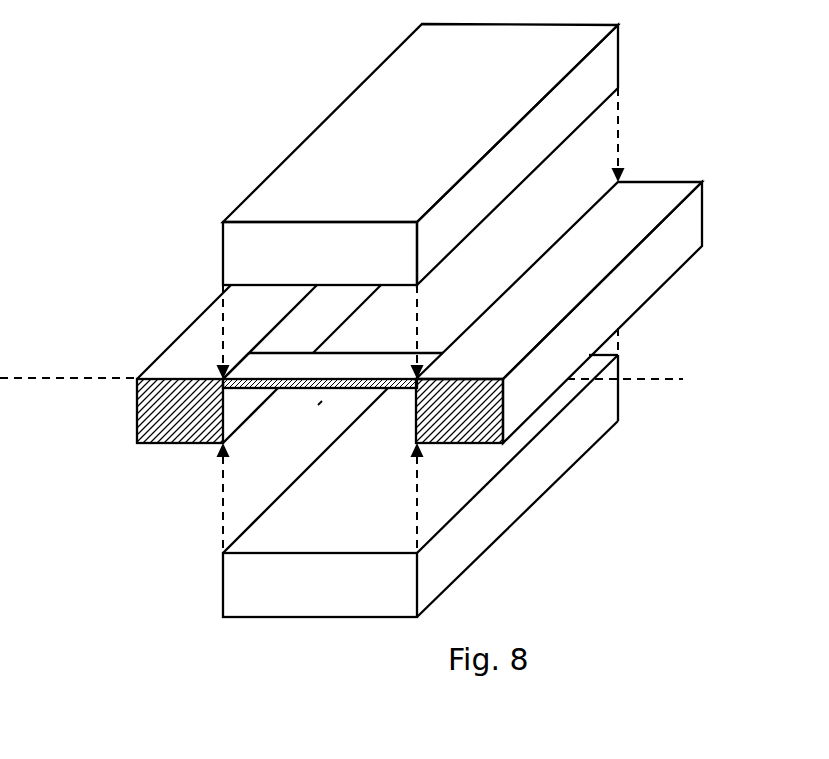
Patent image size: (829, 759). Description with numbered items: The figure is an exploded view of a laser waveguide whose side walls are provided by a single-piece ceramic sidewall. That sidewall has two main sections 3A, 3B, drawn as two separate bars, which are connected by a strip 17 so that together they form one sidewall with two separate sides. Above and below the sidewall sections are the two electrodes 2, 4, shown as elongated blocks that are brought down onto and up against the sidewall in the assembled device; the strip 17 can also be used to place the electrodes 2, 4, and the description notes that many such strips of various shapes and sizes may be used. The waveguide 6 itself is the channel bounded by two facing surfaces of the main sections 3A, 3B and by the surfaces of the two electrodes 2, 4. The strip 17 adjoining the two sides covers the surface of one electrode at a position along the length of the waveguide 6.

The electrode 2 is at (438, 121).
The main section 3A is at (541, 301).
The main section 3B is at (232, 317).
The electrode 4 is at (347, 519).
The waveguide 6 is at (320, 403).
The strip 17 is at (273, 366).